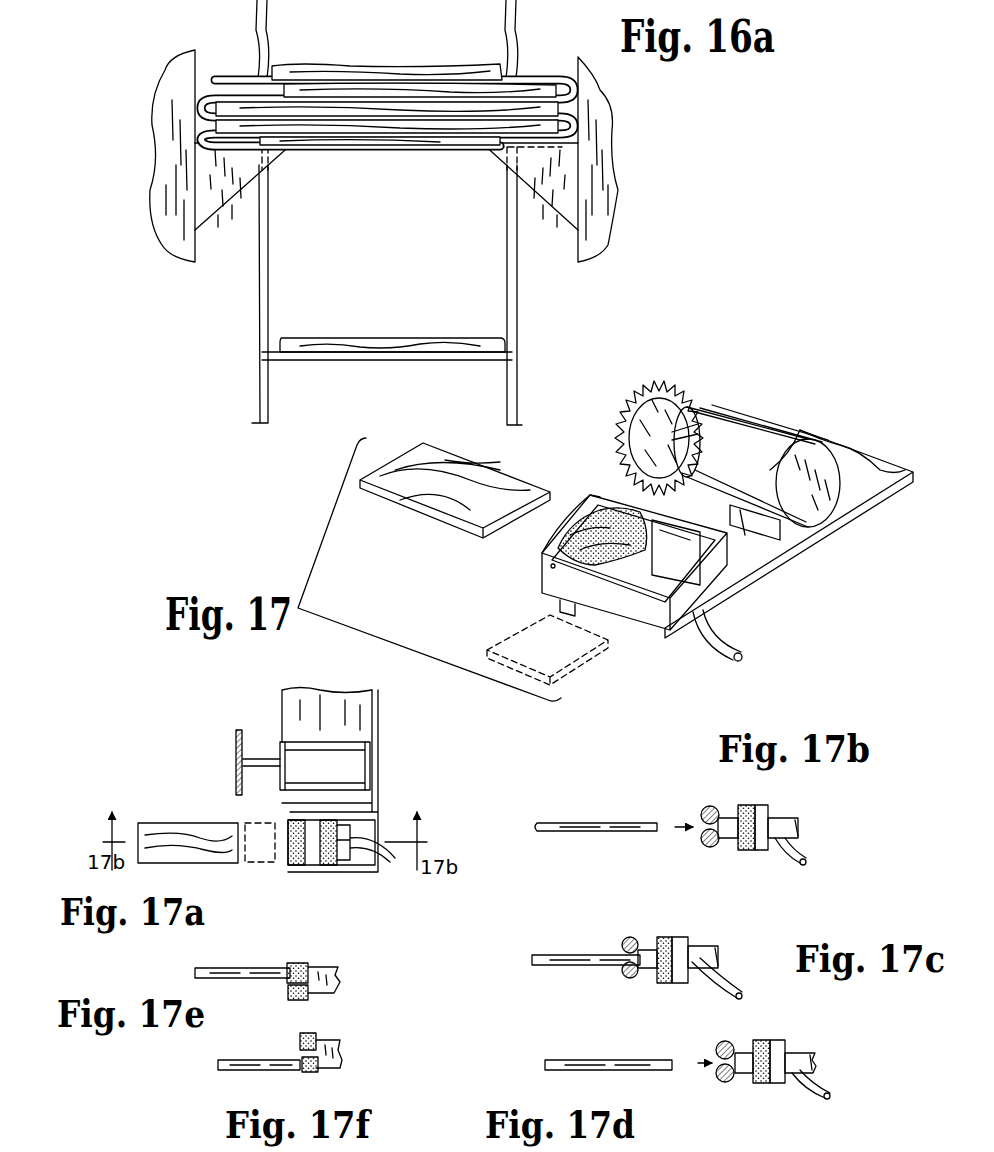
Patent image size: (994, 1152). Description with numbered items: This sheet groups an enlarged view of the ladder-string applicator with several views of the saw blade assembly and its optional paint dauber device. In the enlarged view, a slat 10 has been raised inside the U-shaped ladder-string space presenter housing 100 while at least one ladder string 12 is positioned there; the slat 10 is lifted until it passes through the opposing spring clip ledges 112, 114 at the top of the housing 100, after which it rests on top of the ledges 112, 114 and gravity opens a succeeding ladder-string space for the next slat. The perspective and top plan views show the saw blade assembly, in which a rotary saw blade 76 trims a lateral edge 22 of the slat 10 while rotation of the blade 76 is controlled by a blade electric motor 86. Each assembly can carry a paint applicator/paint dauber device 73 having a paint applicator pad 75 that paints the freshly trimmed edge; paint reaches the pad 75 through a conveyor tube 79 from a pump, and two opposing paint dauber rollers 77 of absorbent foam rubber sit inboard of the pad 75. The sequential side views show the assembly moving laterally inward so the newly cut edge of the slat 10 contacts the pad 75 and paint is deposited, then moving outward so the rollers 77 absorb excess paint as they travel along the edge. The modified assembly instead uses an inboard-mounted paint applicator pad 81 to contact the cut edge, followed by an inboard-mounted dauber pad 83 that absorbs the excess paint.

In FIG. 17, the slat 10 is at (455, 500).
In FIG. 17A, the slat 10 is at (190, 830).
In FIG. 17B, the slat 10 is at (585, 822).
In FIG. 17C, the slat 10 is at (553, 955).
In FIG. 17D, the slat 10 is at (600, 1060).
In FIG. 17E, the slat 10 is at (230, 968).
In FIG. 17F, the slat 10 is at (245, 1065).
In FIG. 16A, the ladder string 12 is at (515, 22).
In FIG. 17, the lateral edge 22 is at (585, 655).
In FIG. 17A, the lateral edge 22 is at (252, 865).
In FIG. 17, the paint applicator/paint dauber device 73 is at (577, 497).
In FIG. 17B, the paint applicator/paint dauber device 73 is at (805, 818).
In FIG. 17C, the paint applicator/paint dauber device 73 is at (742, 950).
In FIG. 17D, the paint applicator/paint dauber device 73 is at (805, 1035).
In FIG. 17, the paint applicator pad 75 is at (727, 533).
In FIG. 17B, the paint applicator pad 75 is at (750, 850).
In FIG. 17C, the paint applicator pad 75 is at (665, 935).
In FIG. 17D, the paint applicator pad 75 is at (760, 1040).
In FIG. 17, the rotary saw blade 76 is at (648, 395).
In FIG. 17A, the rotary saw blade 76 is at (238, 745).
In FIG. 17, the paint dauber rollers 77 is at (545, 545).
In FIG. 17B, the paint dauber rollers 77 is at (708, 807).
In FIG. 17C, the paint dauber rollers 77 is at (633, 937).
In FIG. 17D, the paint dauber rollers 77 is at (722, 1042).
In FIG. 17, the conveyor tube 79 is at (720, 637).
In FIG. 17B, the conveyor tube 79 is at (803, 856).
In FIG. 17C, the conveyor tube 79 is at (732, 988).
In FIG. 17D, the conveyor tube 79 is at (810, 1093).
In FIG. 17E, the inboard-mounted paint applicator pad 81 is at (300, 962).
In FIG. 17F, the inboard-mounted paint applicator pad 81 is at (312, 1040).
In FIG. 17E, the inboard-mounted dauber pad 83 is at (288, 990).
In FIG. 17F, the inboard-mounted dauber pad 83 is at (320, 1068).
In FIG. 17, the blade electric motor 86 is at (757, 428).
In FIG. 17A, the blade electric motor 86 is at (352, 757).
In FIG. 16A, the ladder-string space presenter housing 100 is at (605, 160).
In FIG. 16A, the spring clip ledge 112 is at (545, 185).
In FIG. 16A, the spring clip ledge 114 is at (232, 185).